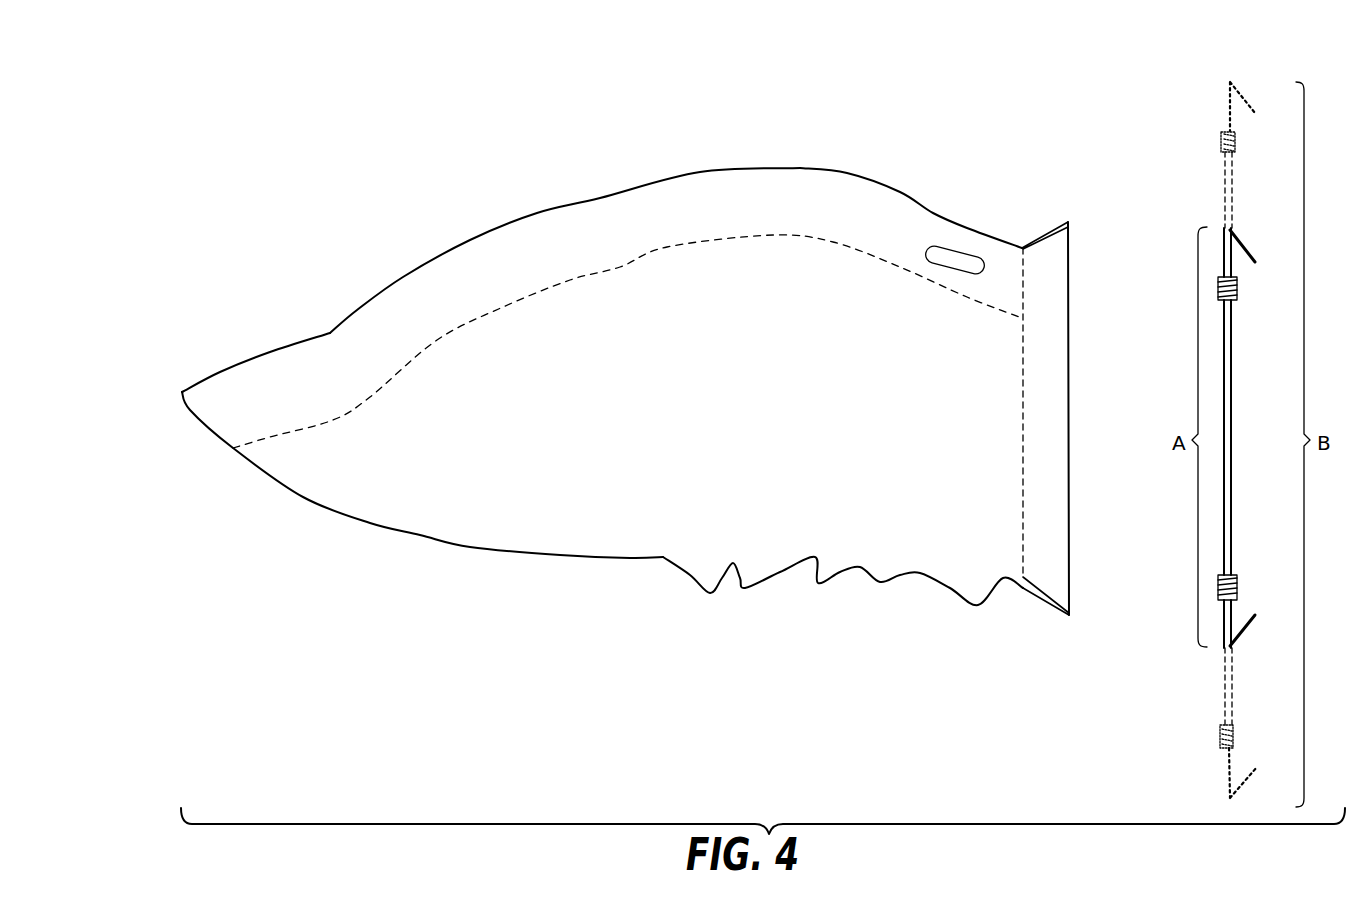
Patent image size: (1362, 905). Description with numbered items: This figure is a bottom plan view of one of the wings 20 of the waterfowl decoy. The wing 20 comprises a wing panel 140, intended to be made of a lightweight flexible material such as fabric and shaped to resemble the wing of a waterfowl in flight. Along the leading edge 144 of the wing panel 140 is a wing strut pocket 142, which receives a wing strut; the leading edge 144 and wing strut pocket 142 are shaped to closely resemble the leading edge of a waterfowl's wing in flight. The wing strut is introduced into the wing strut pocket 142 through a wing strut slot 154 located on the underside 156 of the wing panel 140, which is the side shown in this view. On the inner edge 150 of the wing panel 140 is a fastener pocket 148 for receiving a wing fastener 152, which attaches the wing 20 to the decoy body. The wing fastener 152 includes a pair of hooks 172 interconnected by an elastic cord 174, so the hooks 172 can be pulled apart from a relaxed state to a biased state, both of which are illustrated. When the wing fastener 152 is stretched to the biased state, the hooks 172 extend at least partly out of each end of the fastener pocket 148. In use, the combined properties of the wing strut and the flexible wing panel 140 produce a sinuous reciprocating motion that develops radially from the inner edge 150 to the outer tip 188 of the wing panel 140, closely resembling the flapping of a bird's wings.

The wing 20 is at (662, 372).
The wing panel 140 is at (508, 535).
The wing strut pocket 142 is at (835, 200).
The leading edge 144 is at (698, 173).
The fastener pocket 148 is at (1053, 325).
The inner edge 150 is at (1069, 443).
The wing fastener 152 is at (1207, 440).
The wing strut slot 154 is at (957, 262).
The underside 156 is at (795, 383).
The hooks 172 is at (1242, 237).
The elastic cord 174 is at (1232, 453).
The outer tip 188 is at (633, 558).